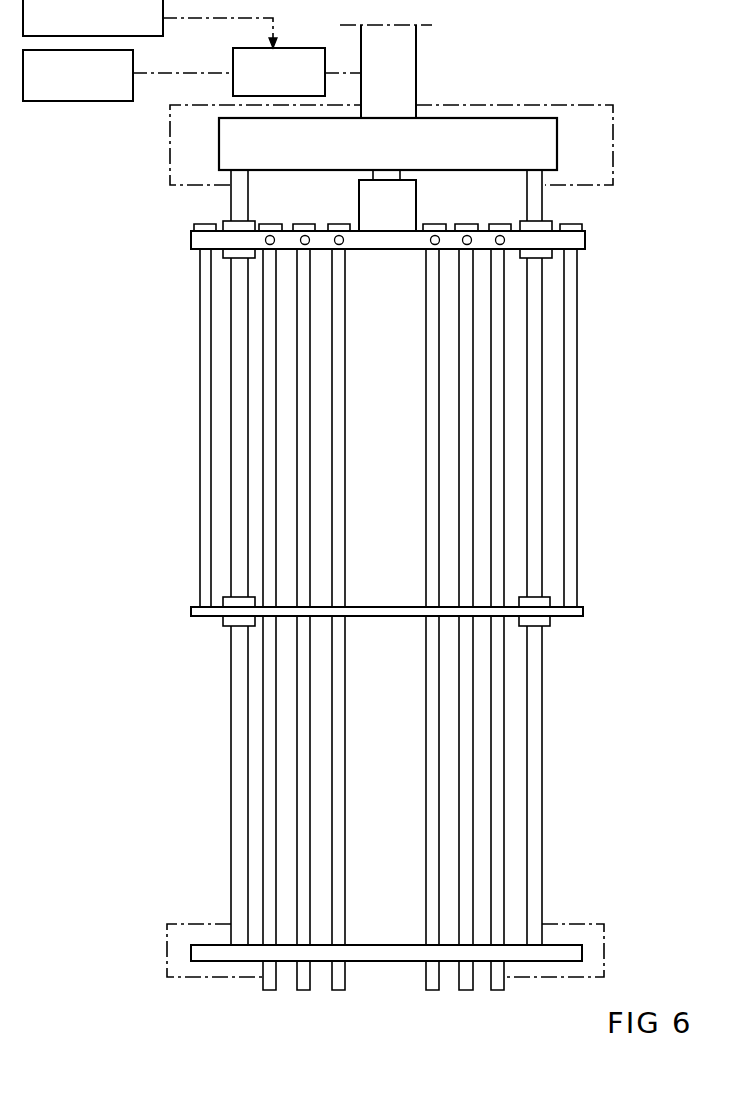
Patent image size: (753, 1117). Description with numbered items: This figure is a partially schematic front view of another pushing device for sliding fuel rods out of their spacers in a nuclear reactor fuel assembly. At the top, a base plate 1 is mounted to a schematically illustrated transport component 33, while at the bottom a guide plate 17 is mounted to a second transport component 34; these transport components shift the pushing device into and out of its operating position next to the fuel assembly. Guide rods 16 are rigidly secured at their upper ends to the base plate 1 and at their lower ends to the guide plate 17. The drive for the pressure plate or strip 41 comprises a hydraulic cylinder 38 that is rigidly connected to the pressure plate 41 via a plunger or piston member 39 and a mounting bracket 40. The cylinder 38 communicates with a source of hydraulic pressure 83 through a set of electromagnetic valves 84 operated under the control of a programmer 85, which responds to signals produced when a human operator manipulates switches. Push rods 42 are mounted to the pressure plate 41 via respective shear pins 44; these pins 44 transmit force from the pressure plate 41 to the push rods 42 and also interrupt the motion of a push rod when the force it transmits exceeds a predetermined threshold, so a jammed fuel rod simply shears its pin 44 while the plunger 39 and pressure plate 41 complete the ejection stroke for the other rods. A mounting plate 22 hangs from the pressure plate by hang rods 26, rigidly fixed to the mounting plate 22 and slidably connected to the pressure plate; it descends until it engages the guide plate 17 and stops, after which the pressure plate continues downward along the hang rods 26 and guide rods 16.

The programmer 85 is at (163, 28).
The source of hydraulic pressure 83 is at (133, 85).
The set of electromagnetic valves 84 is at (292, 51).
The hydraulic cylinder 38 is at (405, 66).
The transport component 33 is at (170, 165).
The base plate 1 is at (219, 144).
The plunger or piston member 39 is at (393, 174).
The mounting bracket 40 is at (359, 192).
The pressure plate or strip 41 is at (585, 243).
The shear pins 44 is at (338, 235).
The guide rods 16 is at (238, 732).
The hang rods 26 is at (204, 418).
The push rods 42 is at (305, 1011).
The mounting plate 22 is at (585, 613).
The guide plate 17 is at (213, 952).
The transport component 34 is at (192, 924).